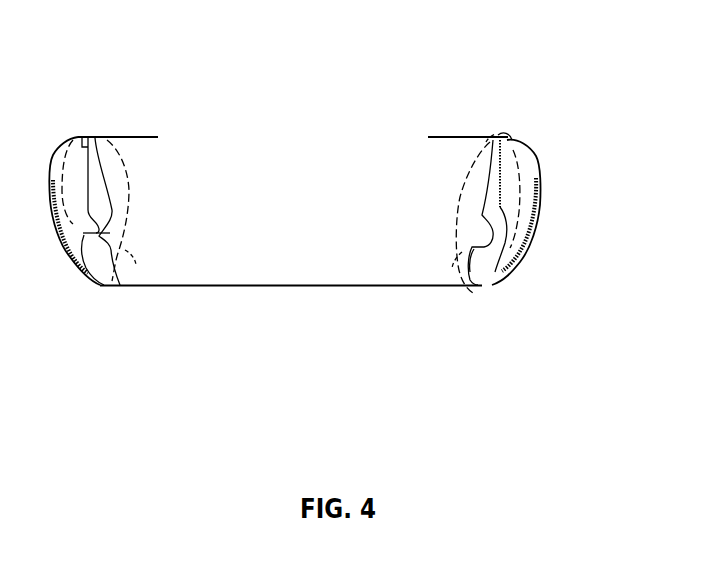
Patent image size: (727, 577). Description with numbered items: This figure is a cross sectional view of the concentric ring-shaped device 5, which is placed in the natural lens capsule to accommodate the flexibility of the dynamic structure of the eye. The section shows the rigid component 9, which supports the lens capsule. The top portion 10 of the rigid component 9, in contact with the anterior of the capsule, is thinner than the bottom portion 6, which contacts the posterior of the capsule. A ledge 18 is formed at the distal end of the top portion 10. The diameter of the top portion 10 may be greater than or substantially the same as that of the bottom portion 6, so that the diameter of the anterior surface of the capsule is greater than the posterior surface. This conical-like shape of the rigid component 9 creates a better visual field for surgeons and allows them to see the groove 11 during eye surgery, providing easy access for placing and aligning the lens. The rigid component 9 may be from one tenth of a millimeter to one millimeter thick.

The concentric ring-shaped device 5 is at (294, 247).
The bottom portion of the rigid component 6 is at (130, 285).
The rigid component 9 is at (508, 193).
The top portion of the rigid component 10 is at (90, 131).
The groove 11 is at (125, 250).
The ledge 18 is at (510, 137).